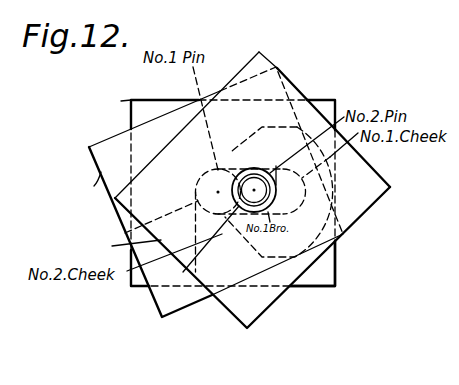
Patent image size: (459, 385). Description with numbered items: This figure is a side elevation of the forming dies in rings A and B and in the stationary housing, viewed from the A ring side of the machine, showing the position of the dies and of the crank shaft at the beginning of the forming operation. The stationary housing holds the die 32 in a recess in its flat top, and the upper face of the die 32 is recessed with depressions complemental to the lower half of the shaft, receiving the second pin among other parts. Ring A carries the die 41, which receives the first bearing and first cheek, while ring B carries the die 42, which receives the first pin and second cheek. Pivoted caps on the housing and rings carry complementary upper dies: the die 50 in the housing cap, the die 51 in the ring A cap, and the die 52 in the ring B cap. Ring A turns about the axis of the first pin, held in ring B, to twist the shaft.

The die 50 is at (143, 107).
The die 52 is at (155, 128).
The die 51 is at (277, 68).
The die 41 is at (215, 180).
The die 32 is at (323, 270).
The die 42 is at (185, 210).